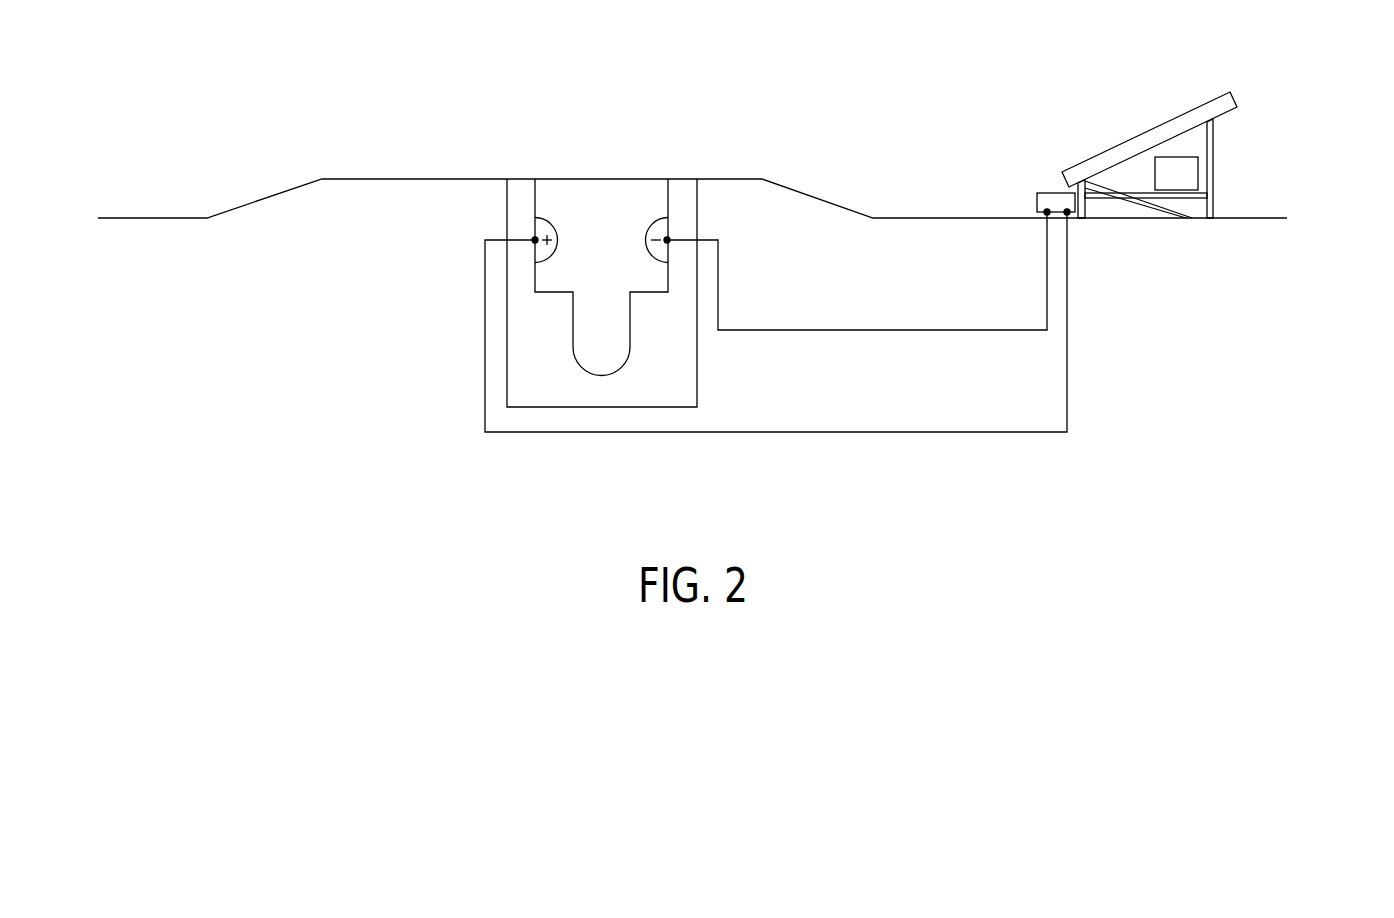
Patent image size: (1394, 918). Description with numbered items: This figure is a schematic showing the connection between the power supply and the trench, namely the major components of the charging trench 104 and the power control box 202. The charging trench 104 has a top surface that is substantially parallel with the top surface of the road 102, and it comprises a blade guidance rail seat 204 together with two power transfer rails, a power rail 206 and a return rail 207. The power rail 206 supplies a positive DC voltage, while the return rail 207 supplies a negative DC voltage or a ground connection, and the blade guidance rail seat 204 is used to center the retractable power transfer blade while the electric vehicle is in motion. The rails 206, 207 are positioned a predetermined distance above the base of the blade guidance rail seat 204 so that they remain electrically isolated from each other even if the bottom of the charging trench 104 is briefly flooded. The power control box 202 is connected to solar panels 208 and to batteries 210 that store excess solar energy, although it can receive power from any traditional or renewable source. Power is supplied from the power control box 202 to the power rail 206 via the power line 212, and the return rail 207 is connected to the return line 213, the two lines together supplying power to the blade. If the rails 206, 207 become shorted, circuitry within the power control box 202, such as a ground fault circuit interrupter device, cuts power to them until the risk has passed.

The road 102 is at (413, 180).
The charging trench 104 is at (537, 355).
The power control box 202 is at (1037, 201).
The blade guidance rail seat 204 is at (602, 363).
The power rail 206 is at (552, 213).
The return rail 207 is at (647, 213).
The solar panel 208 is at (1127, 141).
The batteries 210 is at (1194, 176).
The power line 212 is at (927, 432).
The return line 213 is at (1047, 293).